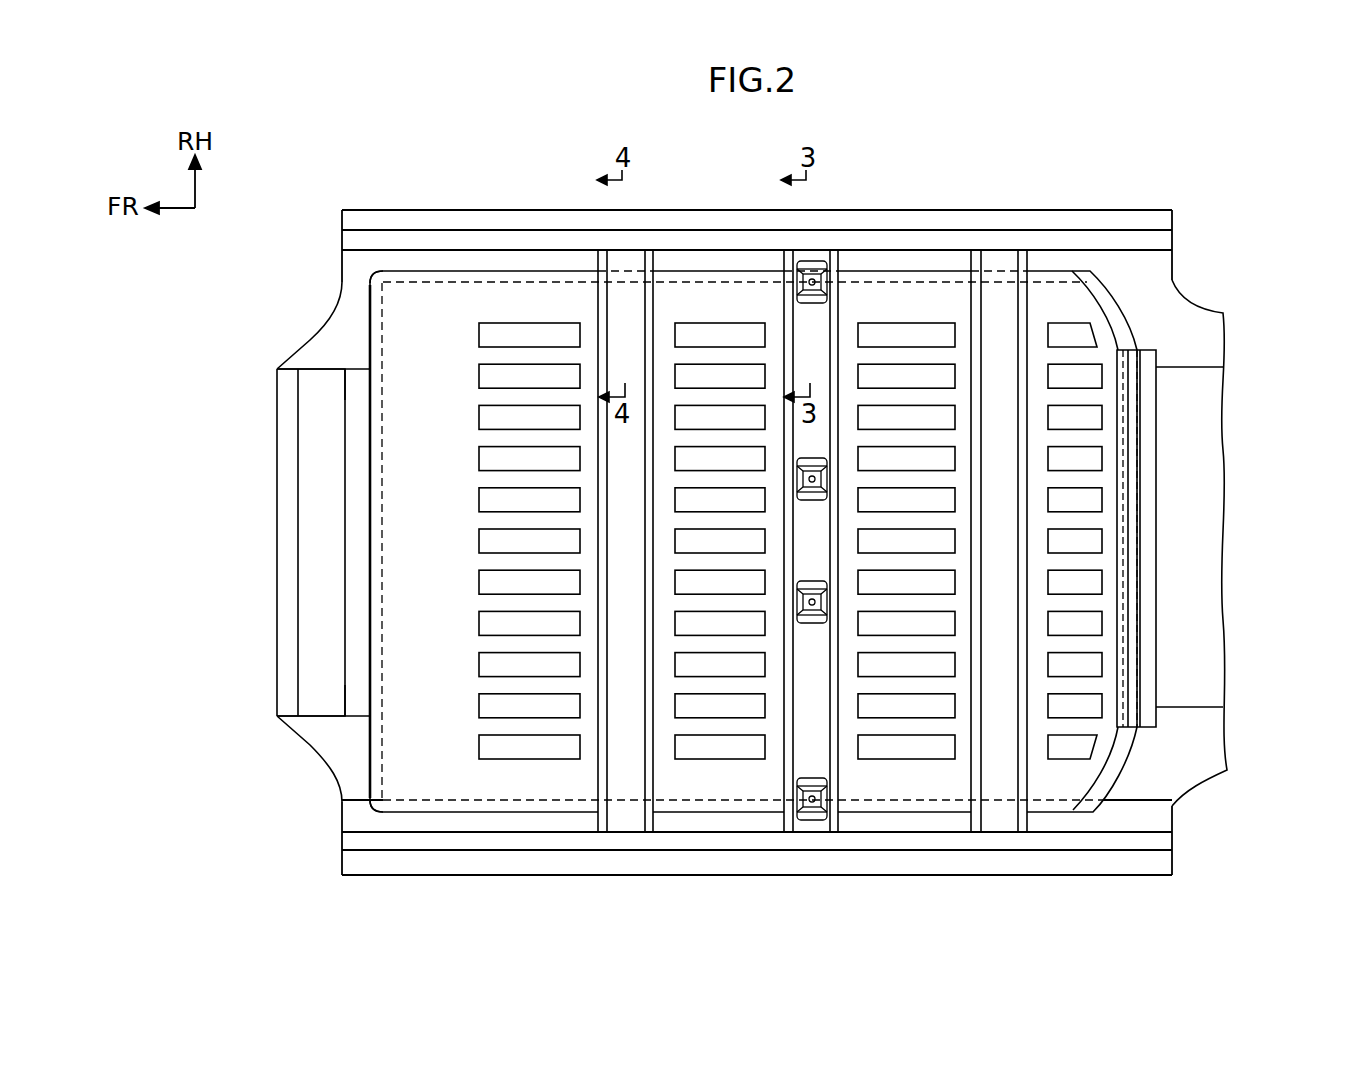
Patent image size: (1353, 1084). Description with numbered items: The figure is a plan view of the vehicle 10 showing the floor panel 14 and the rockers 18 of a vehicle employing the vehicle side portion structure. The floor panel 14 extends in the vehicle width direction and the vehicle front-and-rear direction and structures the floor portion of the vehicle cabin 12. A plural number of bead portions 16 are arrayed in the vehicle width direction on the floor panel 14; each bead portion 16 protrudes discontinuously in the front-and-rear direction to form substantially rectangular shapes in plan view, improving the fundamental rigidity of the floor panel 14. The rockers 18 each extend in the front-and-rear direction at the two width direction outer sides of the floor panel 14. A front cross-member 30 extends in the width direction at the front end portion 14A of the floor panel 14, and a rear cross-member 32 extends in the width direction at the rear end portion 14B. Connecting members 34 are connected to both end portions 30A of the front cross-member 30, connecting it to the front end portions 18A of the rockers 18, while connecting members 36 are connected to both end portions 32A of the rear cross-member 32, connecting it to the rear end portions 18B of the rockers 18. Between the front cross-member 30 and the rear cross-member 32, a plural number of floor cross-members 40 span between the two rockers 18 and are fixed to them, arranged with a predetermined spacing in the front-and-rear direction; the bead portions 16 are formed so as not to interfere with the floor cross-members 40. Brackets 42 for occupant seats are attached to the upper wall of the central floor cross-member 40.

The vehicle 10 is at (1222, 181).
The vehicle cabin 12 is at (444, 536).
The floor panel 14 is at (881, 270).
The front end portion 14A is at (398, 303).
The rear end portion 14B is at (1103, 330).
The bead portions 16 is at (531, 375).
The rockers 18 is at (706, 212).
The front end portions 18A is at (352, 222).
The rear end portions 18B is at (1163, 216).
The front cross-member 30 is at (311, 540).
The end portions 30A is at (316, 380).
The rear cross-member 32 is at (1148, 528).
The end portions 32A is at (1148, 362).
The connecting members 34 is at (323, 352).
The connecting members 36 is at (1198, 328).
The floor cross-members 40 is at (628, 790).
The brackets 42 is at (821, 292).